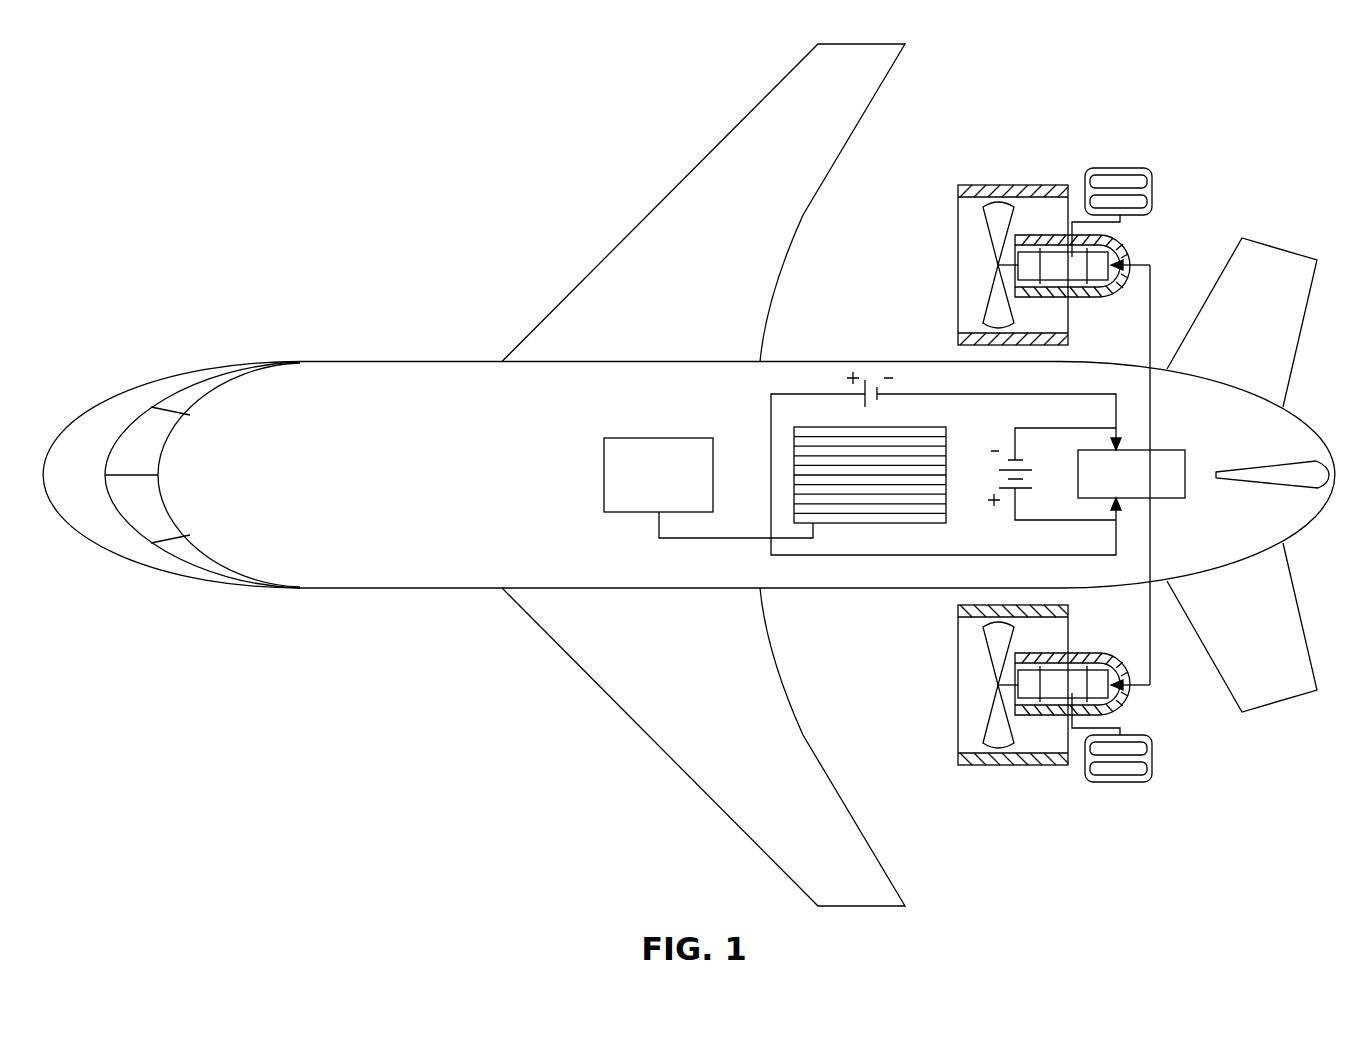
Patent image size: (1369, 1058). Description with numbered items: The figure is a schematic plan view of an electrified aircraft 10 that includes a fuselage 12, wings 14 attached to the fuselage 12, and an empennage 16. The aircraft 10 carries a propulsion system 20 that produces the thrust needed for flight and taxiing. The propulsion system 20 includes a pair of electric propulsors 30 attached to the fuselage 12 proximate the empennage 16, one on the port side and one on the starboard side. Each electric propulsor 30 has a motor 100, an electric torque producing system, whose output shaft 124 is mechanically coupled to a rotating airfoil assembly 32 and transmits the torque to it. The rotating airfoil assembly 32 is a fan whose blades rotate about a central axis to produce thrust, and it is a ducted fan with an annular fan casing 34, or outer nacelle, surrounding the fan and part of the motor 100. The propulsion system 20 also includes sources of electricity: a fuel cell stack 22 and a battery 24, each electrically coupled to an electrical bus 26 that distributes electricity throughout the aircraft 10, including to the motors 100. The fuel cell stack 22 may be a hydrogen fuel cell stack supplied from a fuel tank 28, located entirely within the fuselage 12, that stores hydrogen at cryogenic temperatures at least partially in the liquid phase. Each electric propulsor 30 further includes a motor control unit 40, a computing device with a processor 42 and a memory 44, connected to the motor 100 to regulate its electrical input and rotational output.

The aircraft 10 is at (263, 218).
The fuselage 12 is at (373, 361).
The wings 14 is at (676, 188).
The empennage 16 is at (1300, 421).
The propulsion system 20 is at (974, 110).
The fuel cell stack 22 is at (848, 447).
The battery 24 is at (1012, 488).
The electrical bus 26 is at (1162, 461).
The fuel tank 28 is at (620, 454).
The electric propulsor 30 is at (1090, 114).
The rotating airfoil assembly 32 is at (995, 212).
The annular fan casing 34 is at (966, 192).
The motor control unit 40 is at (1108, 168).
The processor 42 is at (1140, 202).
The memory 44 is at (1140, 183).
The motor 100 is at (1110, 258).
The output shaft 124 is at (1013, 265).